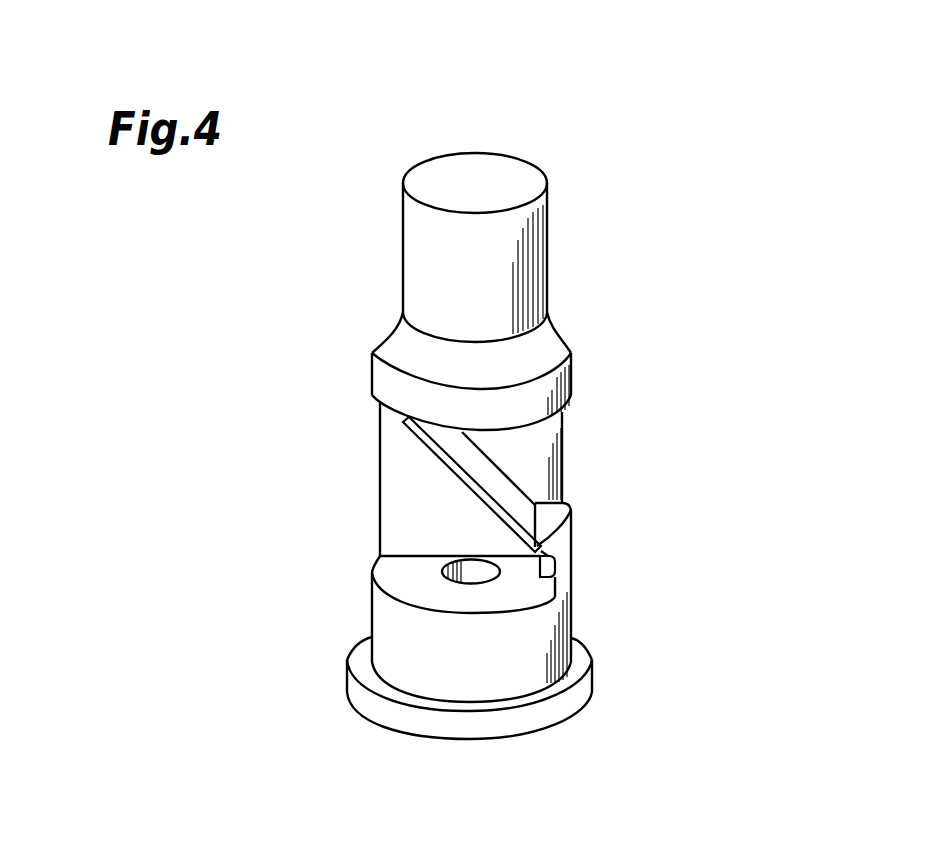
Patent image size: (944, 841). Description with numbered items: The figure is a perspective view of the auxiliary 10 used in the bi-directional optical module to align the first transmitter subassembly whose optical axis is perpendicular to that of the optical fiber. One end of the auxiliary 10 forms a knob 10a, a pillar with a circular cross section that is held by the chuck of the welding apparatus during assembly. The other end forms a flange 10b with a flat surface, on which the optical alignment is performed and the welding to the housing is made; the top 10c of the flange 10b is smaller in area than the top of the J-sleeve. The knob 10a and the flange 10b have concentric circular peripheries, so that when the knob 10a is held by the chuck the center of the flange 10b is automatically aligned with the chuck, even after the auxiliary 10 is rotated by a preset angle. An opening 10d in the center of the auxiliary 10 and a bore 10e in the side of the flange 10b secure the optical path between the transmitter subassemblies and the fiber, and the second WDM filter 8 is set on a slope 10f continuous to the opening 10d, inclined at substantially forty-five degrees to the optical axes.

The auxiliary 10 is at (576, 190).
The knob 10a is at (533, 237).
The flange 10b is at (585, 693).
The top of the flange 10c is at (503, 739).
The opening 10d is at (535, 443).
The bore 10e is at (443, 572).
The slope 10f is at (555, 570).
The second WDM filter 8 is at (430, 448).